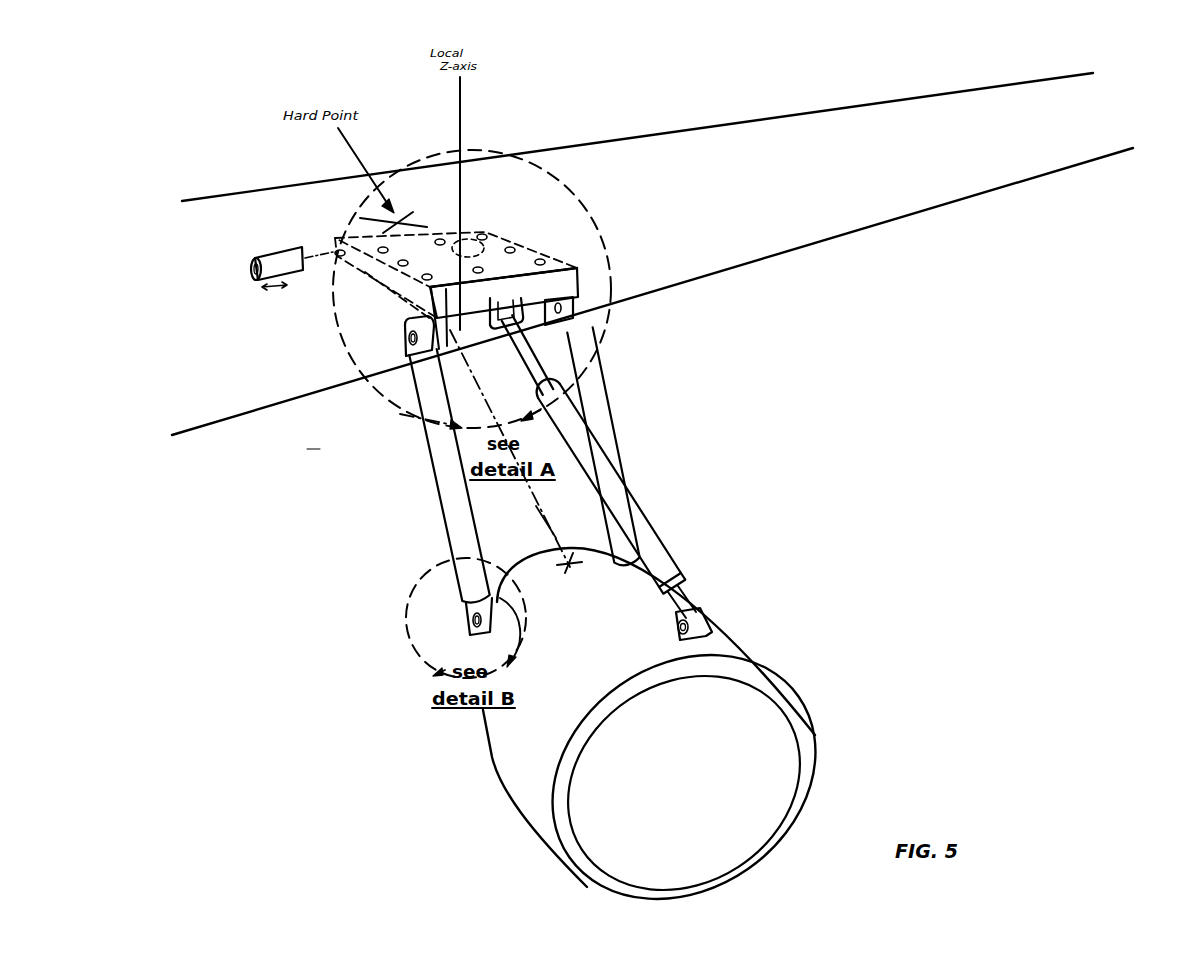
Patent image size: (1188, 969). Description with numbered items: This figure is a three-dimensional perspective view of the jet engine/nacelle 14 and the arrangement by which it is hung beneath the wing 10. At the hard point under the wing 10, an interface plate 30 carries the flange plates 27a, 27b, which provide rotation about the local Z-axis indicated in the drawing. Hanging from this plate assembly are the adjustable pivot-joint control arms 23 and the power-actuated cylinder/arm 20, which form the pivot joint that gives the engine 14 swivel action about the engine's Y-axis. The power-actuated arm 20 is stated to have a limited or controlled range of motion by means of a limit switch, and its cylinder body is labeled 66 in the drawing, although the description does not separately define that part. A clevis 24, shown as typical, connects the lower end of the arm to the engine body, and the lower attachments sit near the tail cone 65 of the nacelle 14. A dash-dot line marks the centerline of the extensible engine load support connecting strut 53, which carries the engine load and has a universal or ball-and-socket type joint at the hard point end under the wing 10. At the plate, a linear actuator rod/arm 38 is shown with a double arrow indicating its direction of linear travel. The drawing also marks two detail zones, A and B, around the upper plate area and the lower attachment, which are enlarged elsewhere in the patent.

The wing 10 is at (957, 163).
The jet engine/nacelle 14 is at (673, 727).
The power-actuated cylinder/arm 20 is at (655, 483).
The adjustable pivot-joint control arm 23 is at (609, 411).
The clevis 24 is at (707, 614).
The flange plate 27a is at (503, 256).
The flange plate 27b is at (580, 273).
The interface plate 30 is at (580, 273).
The linear actuator rod/arm 38 is at (270, 258).
The extensible engine load support connecting strut 53 is at (397, 443).
The tail cone 65 is at (507, 553).
The actuator cylinder 66 is at (658, 557).